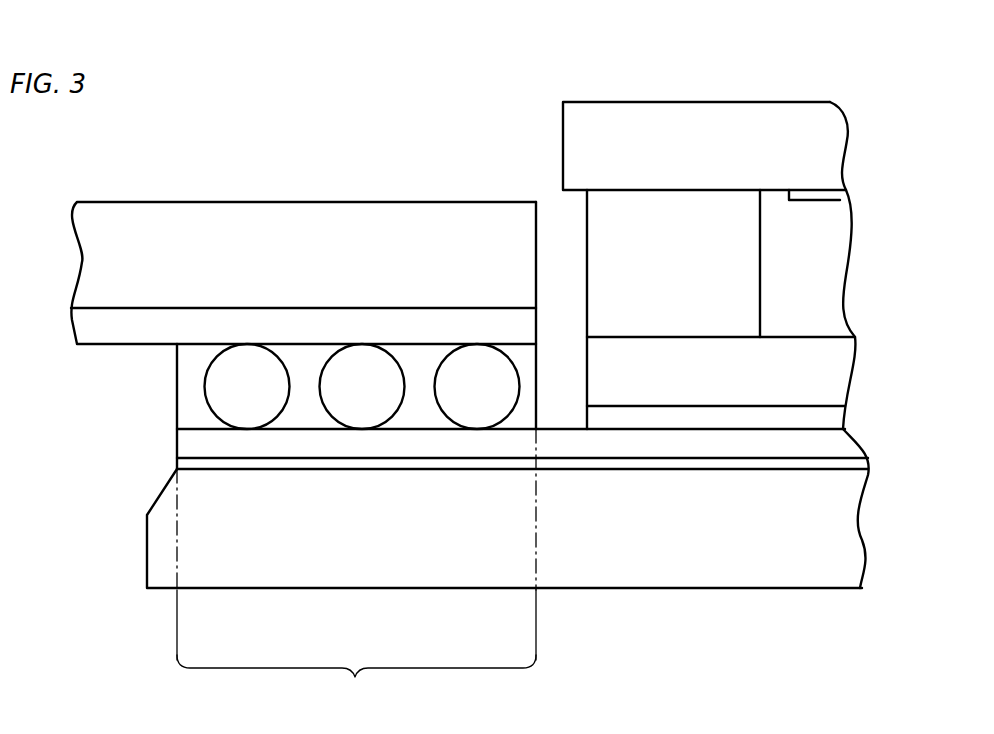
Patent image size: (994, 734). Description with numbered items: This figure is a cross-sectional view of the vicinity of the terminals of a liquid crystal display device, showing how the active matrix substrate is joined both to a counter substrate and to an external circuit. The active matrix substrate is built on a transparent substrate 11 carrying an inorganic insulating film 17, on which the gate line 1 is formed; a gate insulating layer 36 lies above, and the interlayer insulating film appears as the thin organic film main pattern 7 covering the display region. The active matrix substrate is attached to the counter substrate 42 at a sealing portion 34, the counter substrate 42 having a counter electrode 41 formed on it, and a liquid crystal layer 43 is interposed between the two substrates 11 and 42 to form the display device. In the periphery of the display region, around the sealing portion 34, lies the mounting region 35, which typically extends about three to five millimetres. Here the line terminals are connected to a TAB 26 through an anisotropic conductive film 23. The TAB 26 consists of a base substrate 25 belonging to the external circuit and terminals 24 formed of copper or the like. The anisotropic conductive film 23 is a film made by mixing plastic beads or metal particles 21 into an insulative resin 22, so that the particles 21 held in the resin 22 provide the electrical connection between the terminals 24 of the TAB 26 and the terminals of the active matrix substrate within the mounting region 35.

The gate line 1 is at (722, 443).
The thin organic film main pattern 7 is at (873, 337).
The transparent substrate 11 is at (608, 555).
The inorganic insulating film 17 is at (845, 470).
The plastic beads or metal particles 21 is at (246, 415).
The insulative resin 22 is at (416, 415).
The anisotropic conductive film 23 is at (165, 398).
The terminals 24 is at (430, 325).
The base substrate 25 is at (277, 228).
The TAB 26 is at (163, 188).
The sealing portion 34 is at (598, 223).
The mounting region 35 is at (356, 570).
The gate insulating layer 36 is at (805, 413).
The counter electrode 41 is at (815, 190).
The counter substrate 42 is at (722, 133).
The liquid crystal layer 43 is at (829, 227).